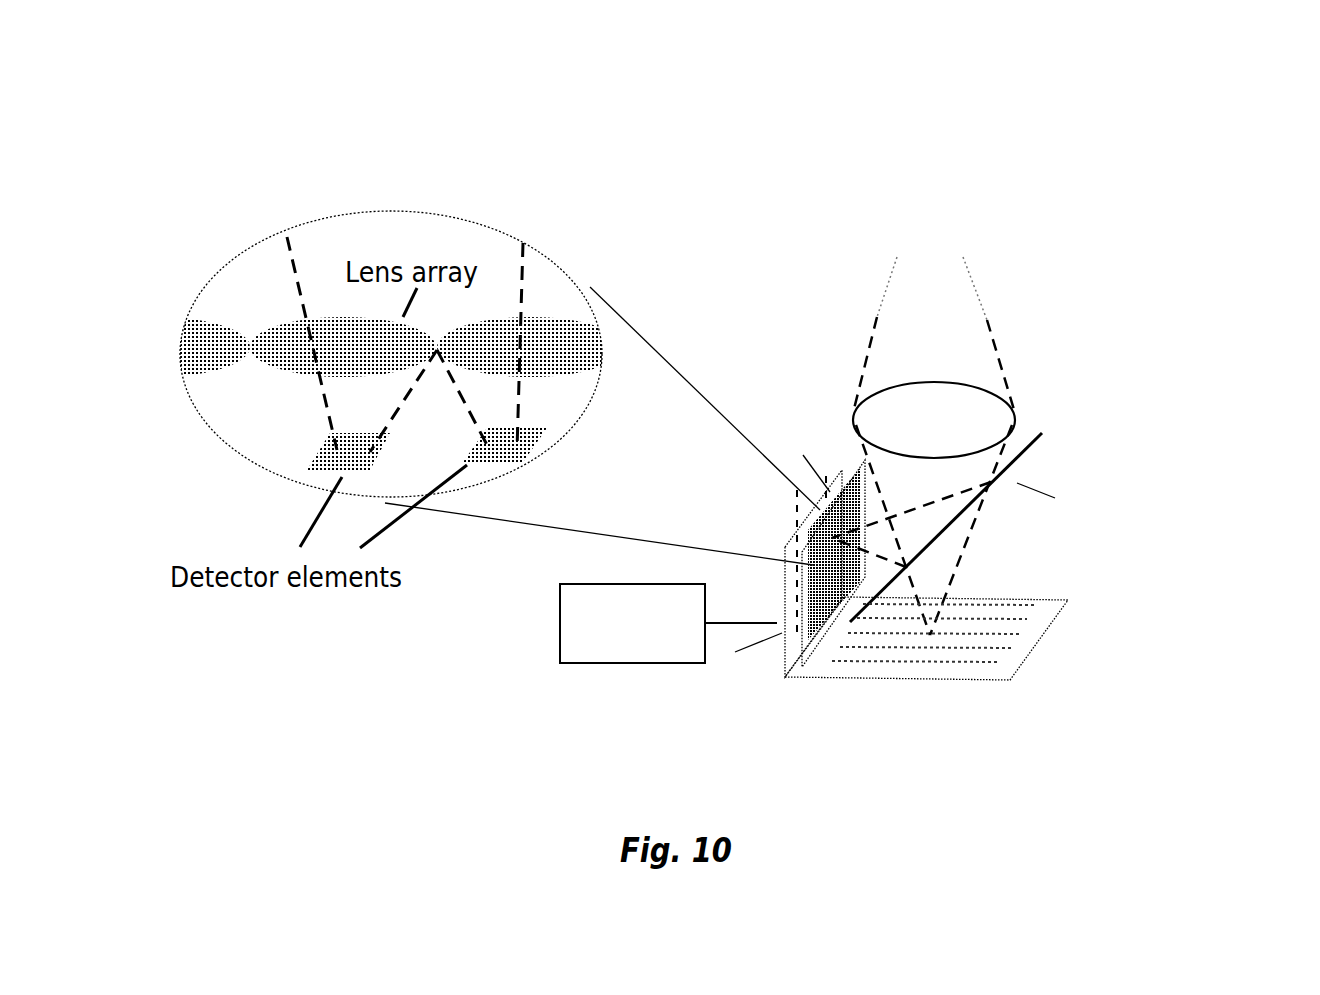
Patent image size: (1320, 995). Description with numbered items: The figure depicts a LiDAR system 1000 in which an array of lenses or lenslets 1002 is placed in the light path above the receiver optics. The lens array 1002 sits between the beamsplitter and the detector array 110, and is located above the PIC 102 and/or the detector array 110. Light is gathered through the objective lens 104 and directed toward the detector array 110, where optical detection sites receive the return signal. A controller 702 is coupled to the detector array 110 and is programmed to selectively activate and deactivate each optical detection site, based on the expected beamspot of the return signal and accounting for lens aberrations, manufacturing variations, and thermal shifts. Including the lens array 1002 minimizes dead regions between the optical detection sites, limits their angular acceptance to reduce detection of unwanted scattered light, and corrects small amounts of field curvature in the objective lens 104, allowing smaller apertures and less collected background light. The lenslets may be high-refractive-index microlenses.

The LiDAR system 1000 is at (1147, 53).
The lens array 1002 is at (853, 470).
The objective lens 104 is at (1035, 415).
The PIC 102 is at (1063, 642).
The detector array 110 is at (773, 593).
The controller 702 is at (538, 625).